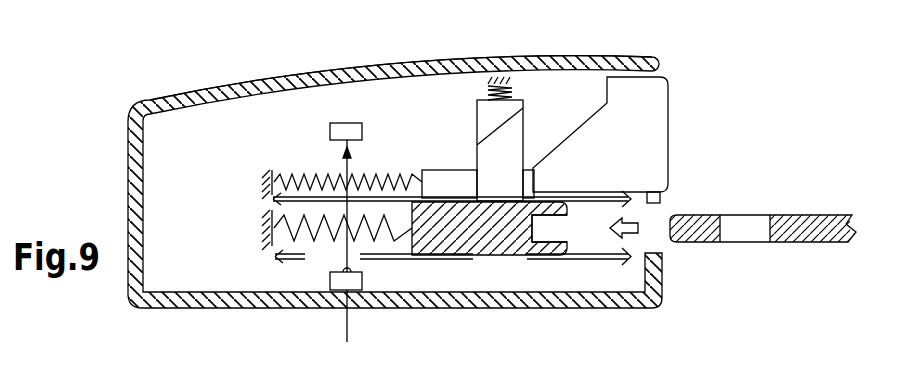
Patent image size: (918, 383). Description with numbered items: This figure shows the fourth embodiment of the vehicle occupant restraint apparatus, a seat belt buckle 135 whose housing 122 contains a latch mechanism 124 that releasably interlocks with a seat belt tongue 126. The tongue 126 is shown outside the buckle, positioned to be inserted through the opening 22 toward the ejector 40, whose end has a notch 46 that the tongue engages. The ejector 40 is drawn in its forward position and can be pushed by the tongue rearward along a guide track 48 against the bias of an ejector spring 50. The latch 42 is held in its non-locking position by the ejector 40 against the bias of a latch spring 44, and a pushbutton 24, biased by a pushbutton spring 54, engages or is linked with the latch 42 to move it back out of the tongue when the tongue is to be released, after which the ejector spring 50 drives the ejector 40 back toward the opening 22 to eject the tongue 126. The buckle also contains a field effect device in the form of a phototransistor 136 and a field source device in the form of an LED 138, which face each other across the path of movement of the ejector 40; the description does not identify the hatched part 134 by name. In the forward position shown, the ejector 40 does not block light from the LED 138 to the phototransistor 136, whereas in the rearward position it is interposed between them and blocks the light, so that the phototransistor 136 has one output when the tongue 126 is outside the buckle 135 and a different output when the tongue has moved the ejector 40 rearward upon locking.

The buckle 135 is at (128, 90).
The housing 122 is at (301, 80).
The latch mechanism 124 is at (238, 166).
The pushbutton spring 54 is at (285, 178).
The ejector spring 50 is at (273, 250).
The phototransistor 136 is at (350, 133).
The LED 138 is at (351, 318).
The latch 42 is at (500, 117).
The latch spring 44 is at (490, 95).
The pushbutton 24 is at (668, 130).
The opening 22 is at (667, 207).
The ejector 40 is at (458, 236).
The piston 134 is at (427, 253).
The guide track 48 is at (575, 258).
The notch 46 is at (569, 230).
The seat belt tongue 126 is at (800, 227).